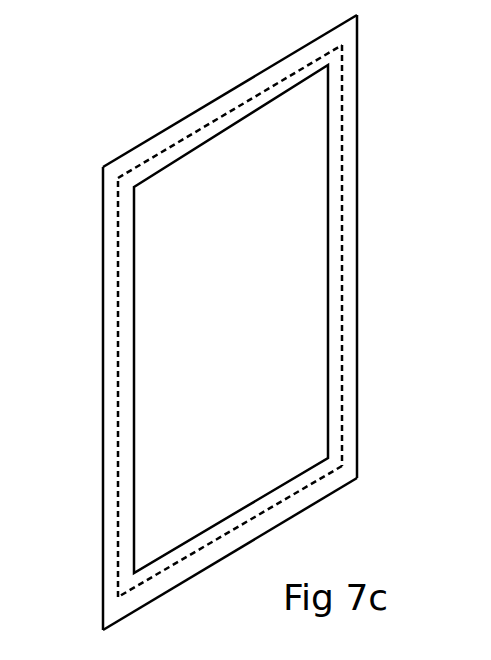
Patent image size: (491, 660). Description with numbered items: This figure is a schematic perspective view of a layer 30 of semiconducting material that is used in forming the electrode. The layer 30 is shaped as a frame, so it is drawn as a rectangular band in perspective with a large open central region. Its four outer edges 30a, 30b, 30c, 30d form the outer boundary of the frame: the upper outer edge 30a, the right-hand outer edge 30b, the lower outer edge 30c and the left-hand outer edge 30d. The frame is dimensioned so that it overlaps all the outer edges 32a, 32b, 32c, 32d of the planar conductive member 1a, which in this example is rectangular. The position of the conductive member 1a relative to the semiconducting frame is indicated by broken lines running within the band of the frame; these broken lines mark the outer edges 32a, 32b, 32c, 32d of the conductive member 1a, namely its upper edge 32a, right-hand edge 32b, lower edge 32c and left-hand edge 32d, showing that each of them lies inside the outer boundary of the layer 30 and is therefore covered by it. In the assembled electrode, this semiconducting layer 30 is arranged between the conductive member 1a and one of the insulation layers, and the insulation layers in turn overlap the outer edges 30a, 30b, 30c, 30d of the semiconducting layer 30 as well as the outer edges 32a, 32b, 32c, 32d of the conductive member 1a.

The layer of semiconducting material 30 is at (233, 334).
The outer edge of semiconducting layer 30a is at (162, 132).
The outer edge of semiconducting layer 30b is at (358, 123).
The outer edge of semiconducting layer 30c is at (175, 588).
The outer edge of semiconducting layer 30d is at (102, 402).
The outer edge of planar conductive member 32a is at (222, 115).
The outer edge of planar conductive member 32b is at (340, 253).
The outer edge of planar conductive member 32c is at (303, 483).
The outer edge of planar conductive member 32d is at (116, 312).
The planar conductive member 1a is at (308, 217).